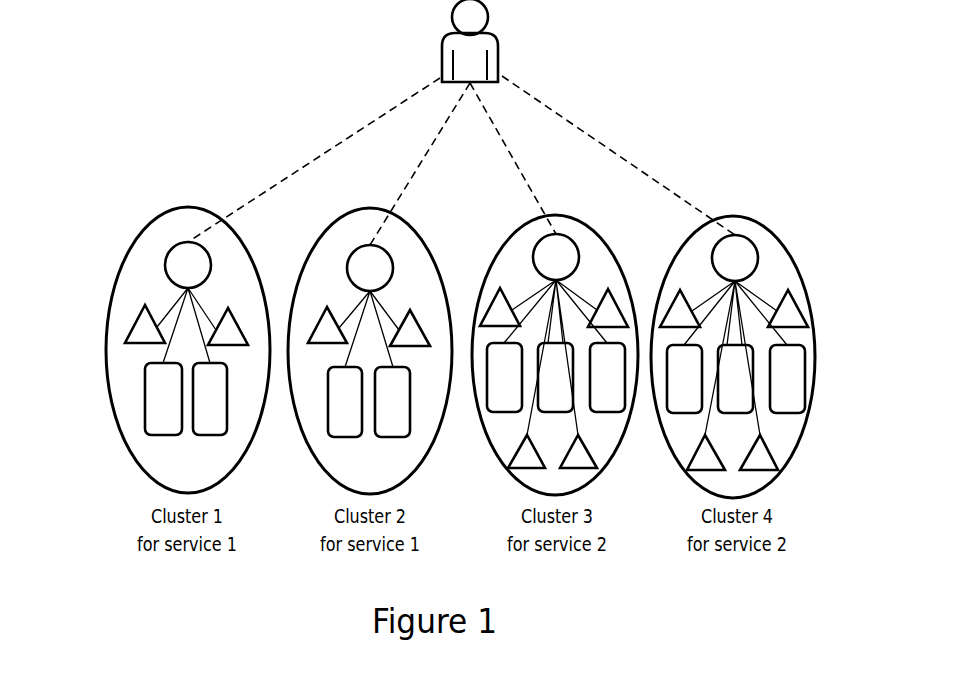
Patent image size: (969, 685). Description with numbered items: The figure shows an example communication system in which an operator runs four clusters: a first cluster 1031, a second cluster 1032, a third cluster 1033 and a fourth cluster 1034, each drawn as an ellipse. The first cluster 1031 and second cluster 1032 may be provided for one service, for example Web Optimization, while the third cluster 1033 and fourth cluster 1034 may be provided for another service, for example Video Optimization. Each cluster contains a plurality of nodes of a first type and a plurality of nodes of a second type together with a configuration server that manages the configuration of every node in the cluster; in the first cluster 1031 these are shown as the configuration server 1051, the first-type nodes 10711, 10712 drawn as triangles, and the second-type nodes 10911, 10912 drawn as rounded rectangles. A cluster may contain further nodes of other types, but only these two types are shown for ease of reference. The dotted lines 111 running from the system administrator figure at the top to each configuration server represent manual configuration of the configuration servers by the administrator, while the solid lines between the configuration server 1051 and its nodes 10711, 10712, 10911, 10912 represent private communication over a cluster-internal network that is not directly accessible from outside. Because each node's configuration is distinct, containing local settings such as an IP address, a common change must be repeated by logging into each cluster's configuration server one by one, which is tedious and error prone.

The first cluster 1031 is at (113, 287).
The second cluster 1032 is at (322, 240).
The third cluster 1033 is at (507, 240).
The fourth cluster 1034 is at (682, 250).
The configuration server 1051 is at (175, 247).
The node of a first type 10711 is at (140, 347).
The node of a first type 10712 is at (228, 347).
The node of a second type 10911 is at (145, 428).
The node of a second type 10912 is at (215, 433).
The dotted lines 111 is at (593, 138).